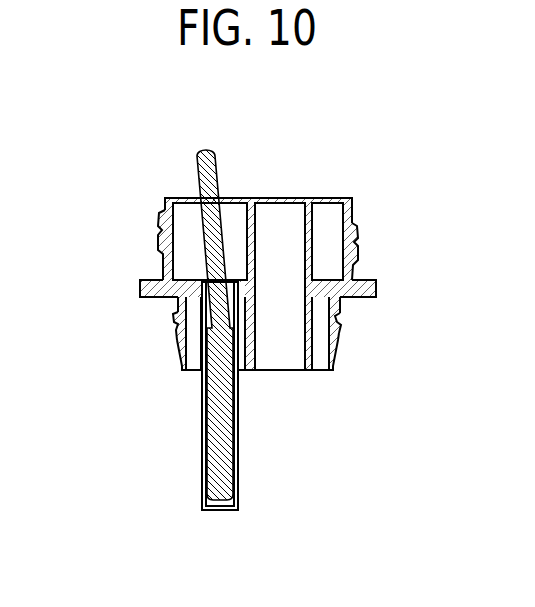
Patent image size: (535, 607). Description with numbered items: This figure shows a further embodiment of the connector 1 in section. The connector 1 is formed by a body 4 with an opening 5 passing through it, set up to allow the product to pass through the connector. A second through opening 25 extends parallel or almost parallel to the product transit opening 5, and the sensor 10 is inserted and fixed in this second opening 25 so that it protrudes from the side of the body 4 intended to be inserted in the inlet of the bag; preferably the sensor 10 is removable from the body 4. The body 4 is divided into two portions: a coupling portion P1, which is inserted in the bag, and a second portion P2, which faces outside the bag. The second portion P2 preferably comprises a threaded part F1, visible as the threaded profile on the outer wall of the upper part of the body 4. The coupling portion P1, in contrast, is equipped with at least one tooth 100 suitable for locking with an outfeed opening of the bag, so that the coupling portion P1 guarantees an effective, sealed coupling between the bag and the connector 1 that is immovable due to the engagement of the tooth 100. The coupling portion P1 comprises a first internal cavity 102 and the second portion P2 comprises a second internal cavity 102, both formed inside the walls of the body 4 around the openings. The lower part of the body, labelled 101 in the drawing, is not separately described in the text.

The connector 1 is at (125, 313).
The body 4 is at (365, 322).
The opening 5 is at (270, 197).
The sensor 10 is at (220, 487).
The second through opening 25 is at (207, 270).
The tooth 100 is at (342, 322).
The lower housing portion 101 is at (193, 372).
The internal cavity 102 is at (331, 197).
The threaded part F1 is at (150, 252).
The coupling portion P1 is at (173, 357).
The second portion P2 is at (153, 204).